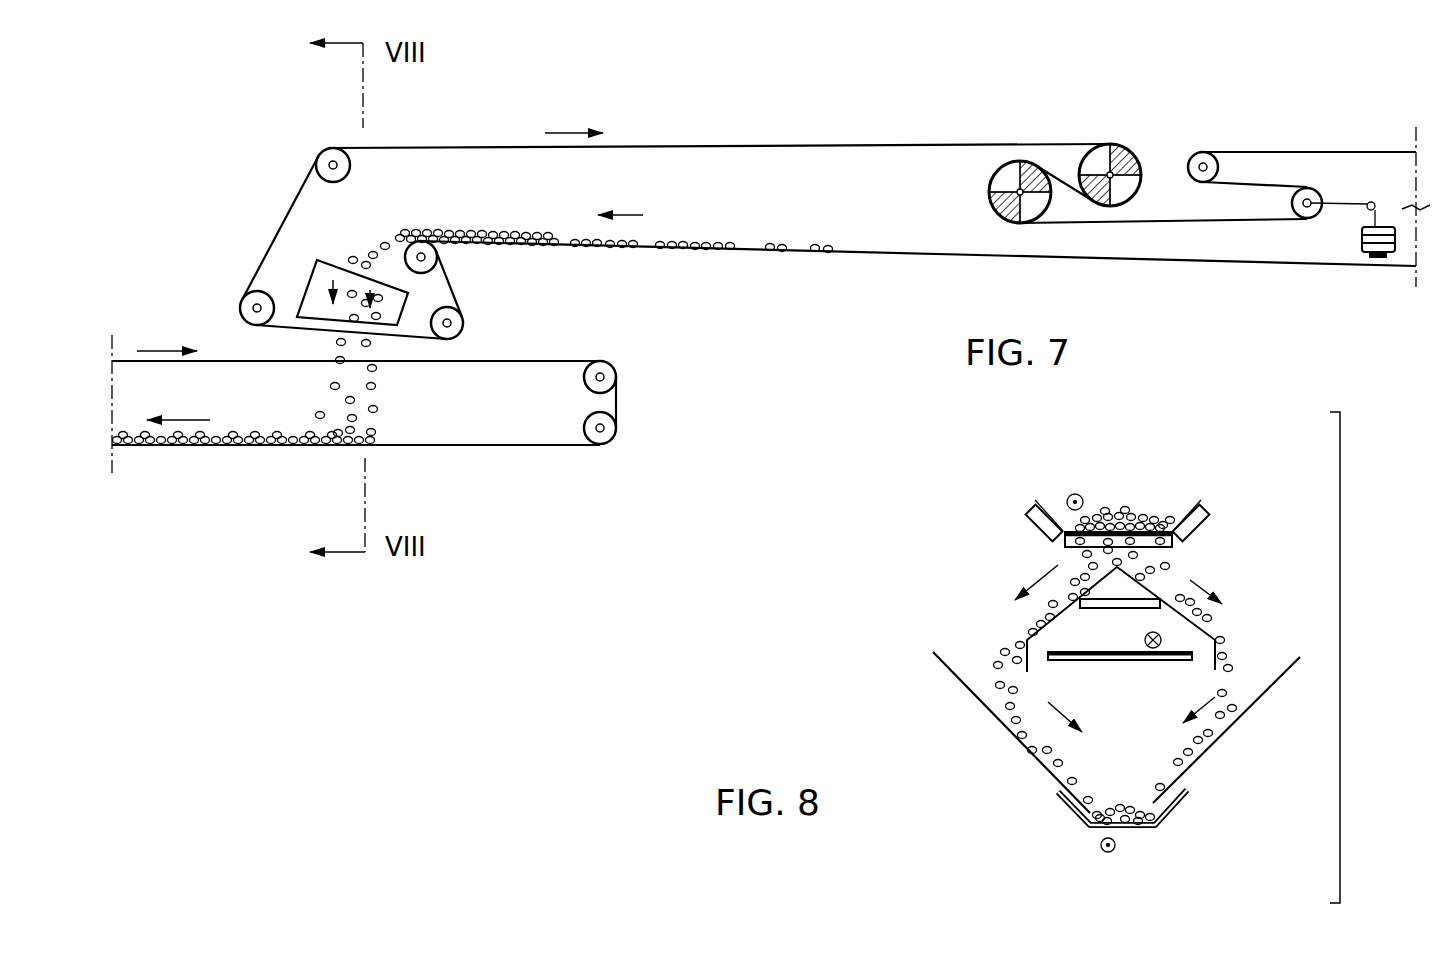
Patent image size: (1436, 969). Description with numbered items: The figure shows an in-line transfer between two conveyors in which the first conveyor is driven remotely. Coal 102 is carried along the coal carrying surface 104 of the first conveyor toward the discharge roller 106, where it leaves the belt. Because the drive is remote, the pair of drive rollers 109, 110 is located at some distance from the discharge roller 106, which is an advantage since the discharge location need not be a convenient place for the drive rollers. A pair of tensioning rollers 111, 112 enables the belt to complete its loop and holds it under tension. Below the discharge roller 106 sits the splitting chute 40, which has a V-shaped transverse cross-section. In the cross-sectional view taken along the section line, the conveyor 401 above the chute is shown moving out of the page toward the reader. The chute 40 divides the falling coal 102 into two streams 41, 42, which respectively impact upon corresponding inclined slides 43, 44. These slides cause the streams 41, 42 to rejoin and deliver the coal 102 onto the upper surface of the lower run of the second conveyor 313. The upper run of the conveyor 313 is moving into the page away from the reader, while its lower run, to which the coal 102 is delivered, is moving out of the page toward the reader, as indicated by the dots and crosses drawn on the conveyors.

In FIG. 7, the coal carrying surface 104 is at (835, 143).
In FIG. 8, the coal carrying surface 104 is at (1140, 600).
In FIG. 7, the discharge roller 106 is at (436, 253).
In FIG. 8, the discharge roller 106 is at (1198, 533).
In FIG. 7, the drive roller 109 is at (993, 213).
In FIG. 7, the drive roller 110 is at (1094, 160).
In FIG. 7, the tensioning roller 111 is at (1220, 168).
In FIG. 7, the tensioning roller 112 is at (1310, 218).
In FIG. 7, the coal 102 is at (497, 228).
In FIG. 8, the coal 102 is at (1100, 512).
In FIG. 7, the splitting chute 40 is at (333, 272).
In FIG. 8, the splitting chute 40 is at (1121, 619).
In FIG. 7, the second conveyor 313 is at (446, 438).
In FIG. 8, the second conveyor 313 is at (1085, 658).
In FIG. 8, the conveyor 401 is at (1172, 508).
In FIG. 8, the stream 41 is at (1227, 645).
In FIG. 8, the stream 42 is at (1003, 660).
In FIG. 8, the inclined slide 43 is at (1222, 735).
In FIG. 8, the inclined slide 44 is at (1003, 722).